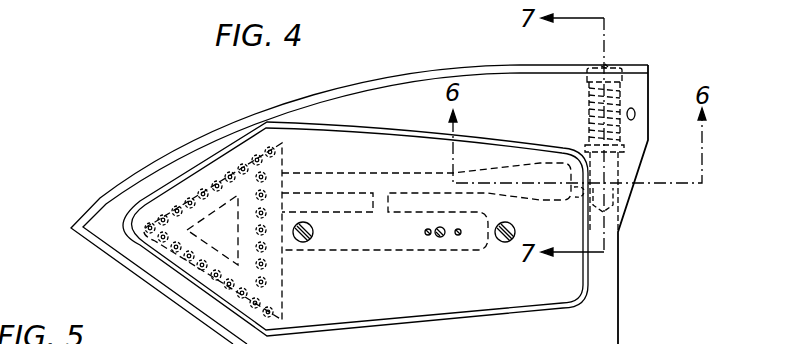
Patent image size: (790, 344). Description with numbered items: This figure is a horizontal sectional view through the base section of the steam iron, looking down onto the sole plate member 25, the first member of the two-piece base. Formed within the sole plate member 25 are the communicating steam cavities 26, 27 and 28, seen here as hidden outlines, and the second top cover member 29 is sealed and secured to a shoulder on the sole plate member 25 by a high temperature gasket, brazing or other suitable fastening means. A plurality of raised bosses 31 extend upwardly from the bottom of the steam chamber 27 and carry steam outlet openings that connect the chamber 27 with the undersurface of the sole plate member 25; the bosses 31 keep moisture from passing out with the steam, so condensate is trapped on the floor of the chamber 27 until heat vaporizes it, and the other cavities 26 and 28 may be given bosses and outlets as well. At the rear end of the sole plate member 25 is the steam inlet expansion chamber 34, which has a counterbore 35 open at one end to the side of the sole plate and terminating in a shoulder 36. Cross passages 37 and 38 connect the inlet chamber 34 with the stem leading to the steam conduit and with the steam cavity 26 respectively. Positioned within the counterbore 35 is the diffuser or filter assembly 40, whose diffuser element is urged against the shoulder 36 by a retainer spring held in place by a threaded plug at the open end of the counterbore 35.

The sole plate member 25 is at (260, 110).
The steam cavity 26 is at (333, 176).
The steam cavity 27 is at (222, 288).
The steam cavity 28 is at (418, 250).
The top cover member 29 is at (460, 297).
The raised bosses 31 is at (240, 165).
The steam inlet expansion chamber 34 is at (616, 188).
The counterbore 35 is at (622, 97).
The shoulder 36 is at (624, 150).
The cross passage 37 is at (635, 114).
The cross passage 38 is at (579, 198).
The diffuser or filter assembly 40 is at (616, 62).